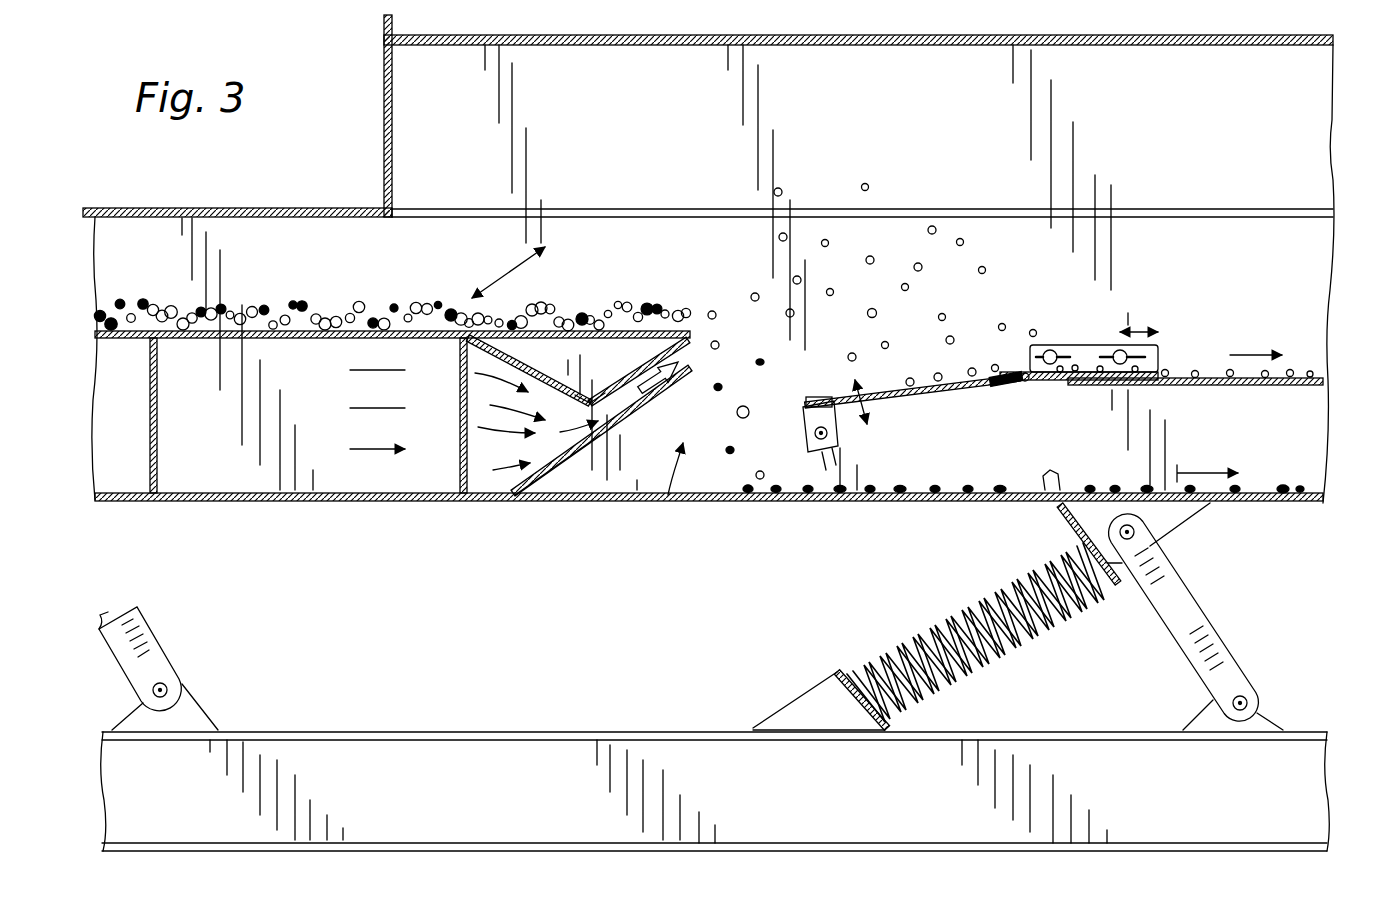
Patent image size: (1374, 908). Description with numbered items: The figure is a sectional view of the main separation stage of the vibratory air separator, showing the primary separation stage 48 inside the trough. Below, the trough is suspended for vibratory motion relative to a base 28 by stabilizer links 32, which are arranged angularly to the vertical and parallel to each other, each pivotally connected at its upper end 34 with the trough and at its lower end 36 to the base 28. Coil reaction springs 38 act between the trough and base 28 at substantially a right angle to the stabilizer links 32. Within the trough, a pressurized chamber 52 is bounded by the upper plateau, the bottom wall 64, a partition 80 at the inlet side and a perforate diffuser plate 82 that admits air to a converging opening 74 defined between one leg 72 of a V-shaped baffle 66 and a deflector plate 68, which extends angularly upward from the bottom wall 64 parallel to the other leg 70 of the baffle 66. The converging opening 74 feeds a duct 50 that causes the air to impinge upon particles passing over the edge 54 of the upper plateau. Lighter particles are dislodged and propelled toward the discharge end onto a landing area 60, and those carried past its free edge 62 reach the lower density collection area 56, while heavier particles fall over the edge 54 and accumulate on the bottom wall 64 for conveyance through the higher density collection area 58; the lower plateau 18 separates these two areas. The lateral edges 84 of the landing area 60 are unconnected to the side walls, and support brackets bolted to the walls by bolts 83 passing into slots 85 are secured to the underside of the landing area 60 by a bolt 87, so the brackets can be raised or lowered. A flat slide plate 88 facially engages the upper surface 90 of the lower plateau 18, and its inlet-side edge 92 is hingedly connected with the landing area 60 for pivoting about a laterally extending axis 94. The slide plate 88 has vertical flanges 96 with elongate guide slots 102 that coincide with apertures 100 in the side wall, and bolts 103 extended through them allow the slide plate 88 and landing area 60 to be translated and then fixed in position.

The lower plateau 18 is at (1300, 377).
The base 28 is at (673, 760).
The stabilizer links 32 is at (1178, 595).
The upper end 34 is at (1138, 535).
The lower end 36 is at (1225, 717).
The reaction springs 38 is at (912, 632).
The primary separation stage 48 is at (658, 463).
The duct 50 is at (620, 408).
The pressurized chamber 52 is at (292, 472).
The edge of the upper plateau 54 is at (695, 330).
The lower density collection area 56 is at (1290, 293).
The higher density collection area 58 is at (1292, 417).
The landing area 60 is at (888, 392).
The free edge of the landing area 62 is at (805, 412).
The bottom wall 64 is at (722, 483).
The V-shaped baffle 66 is at (565, 352).
The deflector plate 68 is at (553, 473).
The leg of the V-shaped baffle 70 is at (627, 373).
The other leg of the baffle 72 is at (523, 357).
The converging opening 74 is at (497, 448).
The partition 80 is at (152, 470).
The diffuser plate 82 is at (457, 462).
The bolts 83 is at (838, 439).
The lateral edges of the landing area 84 is at (940, 390).
The slots 85 is at (827, 450).
The bolt 87 is at (810, 402).
The slide plate 88 is at (1060, 378).
The upper surface of the lower plateau 90 is at (1193, 378).
The edge of the slide plate 92 is at (1027, 372).
The laterally extending axis 94 is at (1015, 380).
The vertical flanges 96 is at (1112, 343).
The apertures 100 is at (1160, 350).
The elongate guide slots 102 is at (1068, 348).
The bolts 103 is at (1054, 350).